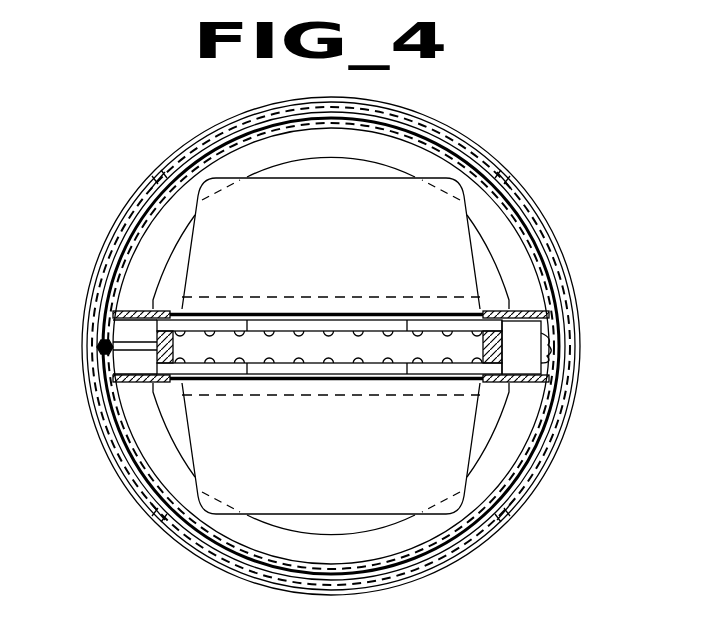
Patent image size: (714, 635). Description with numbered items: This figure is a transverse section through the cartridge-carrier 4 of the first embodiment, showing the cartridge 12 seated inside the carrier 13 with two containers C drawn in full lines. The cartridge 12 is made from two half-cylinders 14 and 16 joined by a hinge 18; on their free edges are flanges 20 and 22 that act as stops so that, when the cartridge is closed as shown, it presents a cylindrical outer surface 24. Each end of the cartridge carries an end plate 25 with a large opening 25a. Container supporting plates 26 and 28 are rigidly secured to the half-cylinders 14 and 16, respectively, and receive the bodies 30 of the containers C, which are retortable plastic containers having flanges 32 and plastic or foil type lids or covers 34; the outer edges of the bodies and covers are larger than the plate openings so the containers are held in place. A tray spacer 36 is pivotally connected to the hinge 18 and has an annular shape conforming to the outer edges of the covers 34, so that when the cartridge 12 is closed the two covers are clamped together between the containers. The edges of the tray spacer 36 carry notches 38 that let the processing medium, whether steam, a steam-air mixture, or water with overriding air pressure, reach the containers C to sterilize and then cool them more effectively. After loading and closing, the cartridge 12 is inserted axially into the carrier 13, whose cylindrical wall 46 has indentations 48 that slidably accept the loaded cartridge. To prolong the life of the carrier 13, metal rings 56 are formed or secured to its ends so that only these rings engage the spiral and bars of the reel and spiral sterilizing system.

The cartridge-carrier 4 is at (502, 99).
The cartridge 12 is at (549, 247).
The carrier 13 is at (572, 277).
The half-cylinder 14 is at (143, 213).
The half-cylinder 16 is at (103, 428).
The hinge 18 is at (97, 345).
The flange 20 is at (542, 336).
The flange 22 is at (548, 365).
The cylindrical outer surface 24 is at (393, 118).
The end plate 25 is at (243, 152).
The large opening 25a is at (296, 157).
The container supporting plate 26 is at (549, 312).
The container supporting plate 28 is at (549, 398).
The container body 30 is at (342, 213).
The flange 32 is at (427, 318).
The lid or cover 34 is at (209, 322).
The tray spacer 36 is at (156, 355).
The notches 38 is at (358, 331).
The cylindrical wall 46 is at (465, 552).
The indentations 48 is at (157, 178).
The metal ring 56 is at (127, 245).
The container C is at (468, 221).